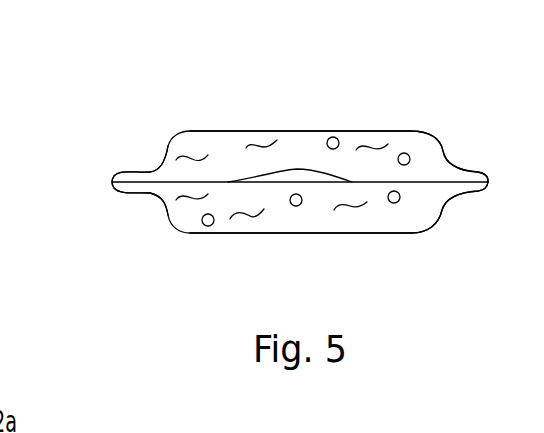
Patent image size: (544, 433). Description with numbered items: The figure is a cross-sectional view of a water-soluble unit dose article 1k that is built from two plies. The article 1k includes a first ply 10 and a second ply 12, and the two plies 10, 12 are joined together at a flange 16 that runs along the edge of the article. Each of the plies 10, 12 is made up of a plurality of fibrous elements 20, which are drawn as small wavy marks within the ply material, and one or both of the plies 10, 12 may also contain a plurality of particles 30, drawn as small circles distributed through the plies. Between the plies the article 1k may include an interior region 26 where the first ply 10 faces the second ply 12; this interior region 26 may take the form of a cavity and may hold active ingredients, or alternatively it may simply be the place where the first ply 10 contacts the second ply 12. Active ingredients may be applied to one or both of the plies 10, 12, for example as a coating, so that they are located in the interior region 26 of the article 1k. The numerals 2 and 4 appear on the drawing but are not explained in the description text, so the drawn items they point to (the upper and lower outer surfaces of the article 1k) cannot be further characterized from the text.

The water-soluble unit dose article 1k is at (202, 101).
The first film layer 2 is at (409, 131).
The second film layer 4 is at (412, 233).
The first ply 10 is at (441, 137).
The second ply 12 is at (430, 211).
The flange 16 is at (142, 200).
The fibrous elements 20 is at (248, 148).
The interior region 26 is at (297, 168).
The particles 30 is at (335, 137).